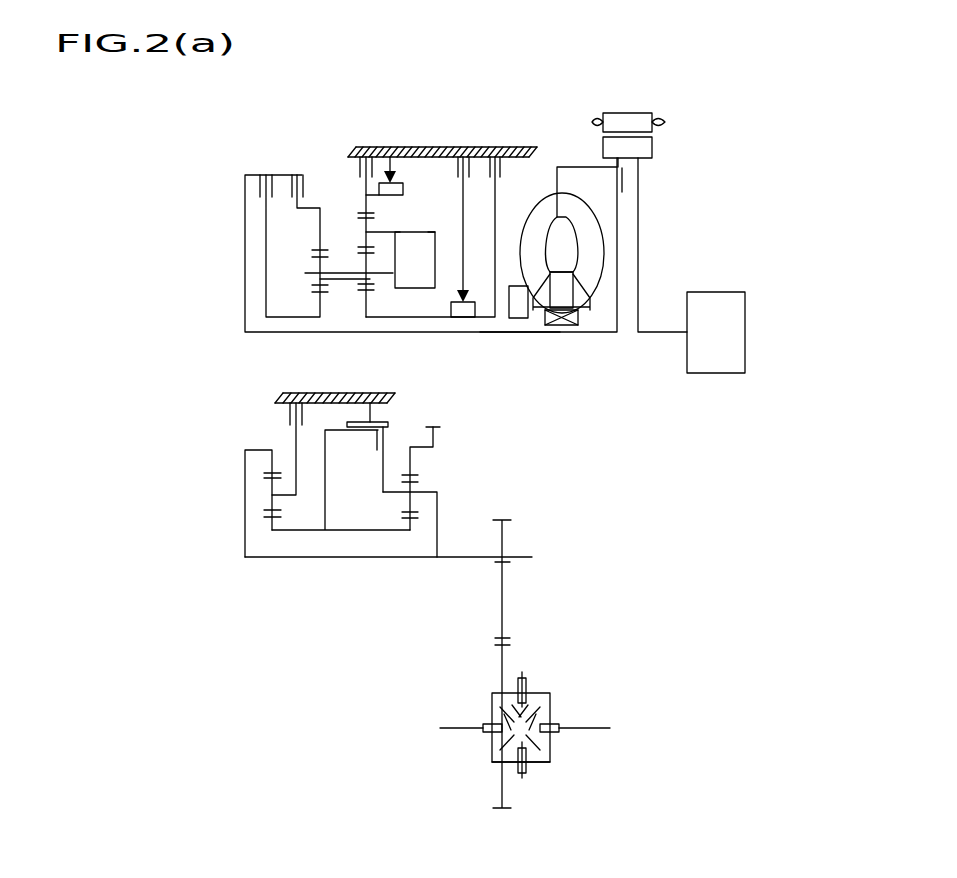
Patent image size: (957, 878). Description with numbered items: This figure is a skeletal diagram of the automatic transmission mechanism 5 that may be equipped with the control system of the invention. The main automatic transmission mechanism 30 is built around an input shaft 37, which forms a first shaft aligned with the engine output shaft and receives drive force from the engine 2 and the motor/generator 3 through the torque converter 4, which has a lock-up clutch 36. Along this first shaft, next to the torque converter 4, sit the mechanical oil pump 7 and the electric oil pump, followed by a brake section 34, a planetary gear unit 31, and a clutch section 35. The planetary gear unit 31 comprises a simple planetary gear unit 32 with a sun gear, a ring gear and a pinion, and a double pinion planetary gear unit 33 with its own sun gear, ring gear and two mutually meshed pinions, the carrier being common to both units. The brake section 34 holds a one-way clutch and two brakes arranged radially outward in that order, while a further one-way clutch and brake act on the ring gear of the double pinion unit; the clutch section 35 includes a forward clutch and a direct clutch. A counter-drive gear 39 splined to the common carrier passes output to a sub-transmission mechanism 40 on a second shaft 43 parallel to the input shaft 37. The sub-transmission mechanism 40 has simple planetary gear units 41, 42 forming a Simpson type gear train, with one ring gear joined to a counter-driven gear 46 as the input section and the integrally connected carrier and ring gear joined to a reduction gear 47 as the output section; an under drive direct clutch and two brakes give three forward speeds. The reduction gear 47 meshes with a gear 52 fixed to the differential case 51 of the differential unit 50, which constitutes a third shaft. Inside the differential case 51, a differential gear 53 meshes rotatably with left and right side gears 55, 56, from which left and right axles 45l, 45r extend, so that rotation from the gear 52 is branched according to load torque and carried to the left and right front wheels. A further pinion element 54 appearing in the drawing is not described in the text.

The engine 2 is at (712, 292).
The motor/generator 3 is at (650, 100).
The torque converter 4 is at (562, 216).
The automatic transmission mechanism 5 is at (403, 98).
The mechanical oil pump 7 is at (508, 286).
The main automatic transmission mechanism 30 is at (361, 245).
The planetary gear unit 31 is at (348, 96).
The simple planetary gear unit 32 is at (313, 190).
The double pinion planetary gear unit 33 is at (350, 183).
The brake section 34 is at (481, 100).
The clutch section 35 is at (241, 160).
The lock-up clutch 36 is at (596, 197).
The input shaft 37 is at (505, 333).
The counter-drive gear 39 is at (443, 246).
The sub-transmission mechanism 40 is at (255, 478).
The simple planetary gear unit 41 is at (442, 455).
The simple planetary gear unit 42 is at (246, 441).
The second shaft 43 is at (383, 558).
The left axle 45l is at (460, 733).
The right axle 45r is at (592, 733).
The counter-driven gear 46 is at (447, 423).
The reduction gear 47 is at (503, 538).
The differential unit 50 is at (518, 697).
The differential case 51 is at (543, 763).
The gear 52 is at (503, 660).
The differential gear 53 is at (532, 755).
The pinion gear 54 is at (522, 689).
The left side gear 55 is at (500, 713).
The right side gear 56 is at (547, 712).